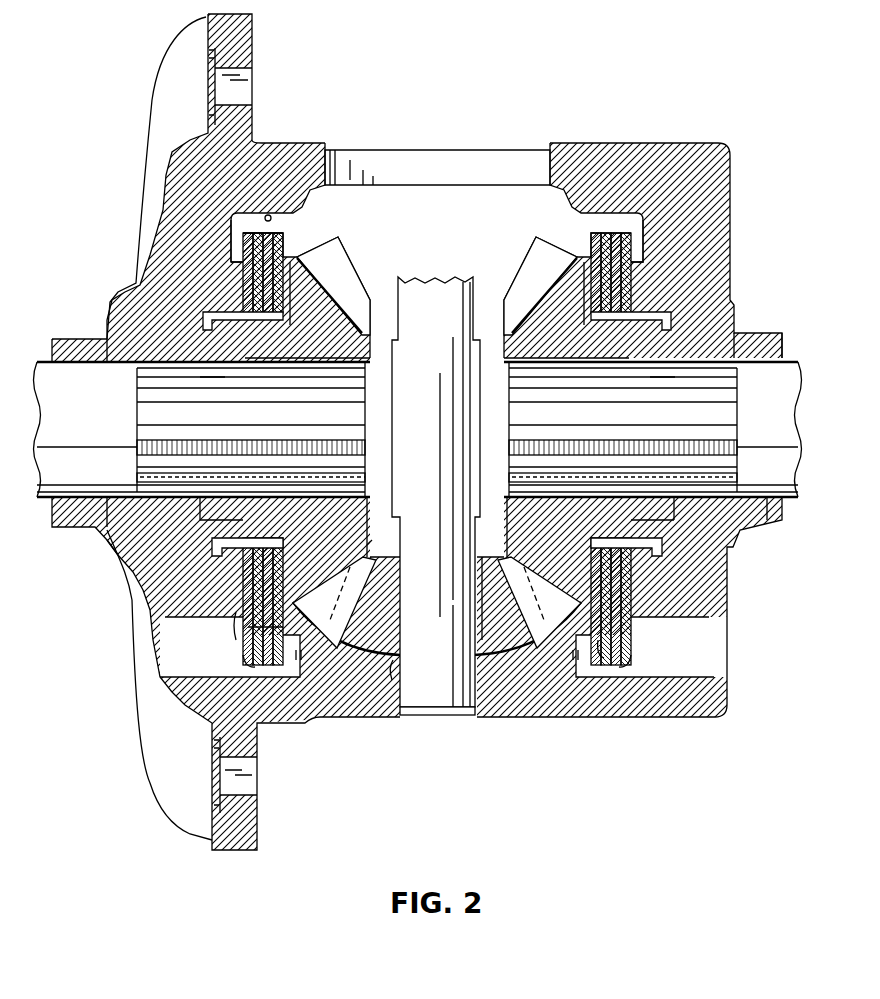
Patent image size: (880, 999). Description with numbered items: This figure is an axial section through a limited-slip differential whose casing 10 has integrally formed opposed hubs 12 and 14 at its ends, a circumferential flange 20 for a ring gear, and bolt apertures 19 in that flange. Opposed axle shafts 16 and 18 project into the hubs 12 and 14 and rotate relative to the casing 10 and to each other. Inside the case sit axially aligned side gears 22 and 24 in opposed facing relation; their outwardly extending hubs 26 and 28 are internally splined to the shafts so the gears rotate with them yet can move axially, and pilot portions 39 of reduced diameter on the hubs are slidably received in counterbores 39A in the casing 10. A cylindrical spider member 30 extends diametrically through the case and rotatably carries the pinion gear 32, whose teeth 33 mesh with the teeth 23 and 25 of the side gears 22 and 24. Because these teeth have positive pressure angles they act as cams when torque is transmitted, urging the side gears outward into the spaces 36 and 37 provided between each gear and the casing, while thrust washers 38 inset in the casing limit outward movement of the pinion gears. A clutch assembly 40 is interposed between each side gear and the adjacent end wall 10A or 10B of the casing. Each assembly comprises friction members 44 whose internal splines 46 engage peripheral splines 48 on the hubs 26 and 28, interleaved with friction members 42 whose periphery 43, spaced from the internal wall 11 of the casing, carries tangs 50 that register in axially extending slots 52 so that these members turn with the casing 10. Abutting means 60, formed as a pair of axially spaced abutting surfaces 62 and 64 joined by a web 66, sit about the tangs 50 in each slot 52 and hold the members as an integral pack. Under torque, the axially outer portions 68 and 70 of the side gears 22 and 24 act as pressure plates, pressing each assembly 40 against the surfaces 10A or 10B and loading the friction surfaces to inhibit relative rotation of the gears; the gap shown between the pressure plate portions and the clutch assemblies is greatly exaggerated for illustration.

The casing 10 is at (681, 145).
The end wall 10A is at (244, 280).
The end wall 10B is at (634, 284).
The internal wall 11 is at (268, 215).
The hub 12 is at (74, 306).
The hub 14 is at (760, 333).
The axle shaft 16 is at (202, 429).
The axle shaft 18 is at (653, 429).
The apertures 19 is at (250, 795).
The circumferential flange 20 is at (240, 35).
The side gear 22 is at (269, 519).
The teeth 23 is at (381, 541).
The side gear 24 is at (605, 519).
The teeth 25 is at (560, 598).
The hub 26 is at (243, 340).
The hub 28 is at (627, 340).
The spider member 30 is at (436, 496).
The pinion gear 32 is at (503, 598).
The teeth 33 is at (320, 642).
The space 36 is at (110, 540).
The space 37 is at (114, 563).
The thrust washers 38 is at (397, 668).
The pilot portions 39 is at (207, 367).
The counterbores 39A is at (207, 315).
The clutch assembly 40 is at (296, 240).
The friction members 42 is at (232, 634).
The periphery 43 is at (286, 230).
The friction members 44 is at (248, 627).
The internal splines 46 is at (252, 538).
The peripheral splines 48 is at (231, 540).
The tangs 50 is at (246, 665).
The slots 52 is at (171, 624).
The abutting means 60 is at (231, 648).
The abutting surface 62 is at (644, 650).
The abutting surface 64 is at (588, 644).
The web 66 is at (612, 668).
The pressure plate portion 68 is at (295, 262).
The pressure plate portion 70 is at (574, 262).